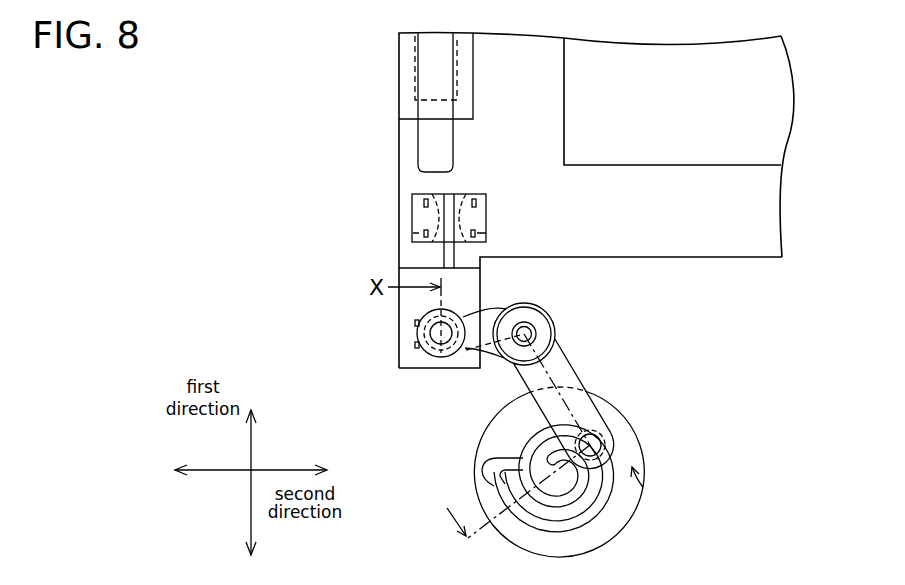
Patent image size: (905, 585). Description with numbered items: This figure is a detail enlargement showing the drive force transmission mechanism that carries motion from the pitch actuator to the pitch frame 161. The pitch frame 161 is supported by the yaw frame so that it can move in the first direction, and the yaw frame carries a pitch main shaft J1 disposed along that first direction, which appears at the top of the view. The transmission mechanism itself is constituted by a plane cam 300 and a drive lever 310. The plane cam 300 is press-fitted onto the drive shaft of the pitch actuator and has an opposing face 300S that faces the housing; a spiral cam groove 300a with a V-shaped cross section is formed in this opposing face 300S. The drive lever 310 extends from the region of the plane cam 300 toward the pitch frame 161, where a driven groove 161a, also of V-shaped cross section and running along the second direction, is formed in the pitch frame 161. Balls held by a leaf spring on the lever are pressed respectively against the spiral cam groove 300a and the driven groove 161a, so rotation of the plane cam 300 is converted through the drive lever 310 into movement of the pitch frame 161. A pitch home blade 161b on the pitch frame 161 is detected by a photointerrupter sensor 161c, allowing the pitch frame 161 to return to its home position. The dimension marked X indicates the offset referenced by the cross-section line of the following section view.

The pitch frame 161 is at (720, 246).
The pitch main shaft J1 is at (416, 100).
The driven groove 161a is at (417, 326).
The pitch home blade 161b is at (444, 260).
The photointerrupter sensor 161c is at (420, 219).
The drive lever 310 is at (568, 352).
The plane cam 300 is at (626, 417).
The spiral cam groove 300a is at (575, 512).
The opposing face 300S is at (643, 487).